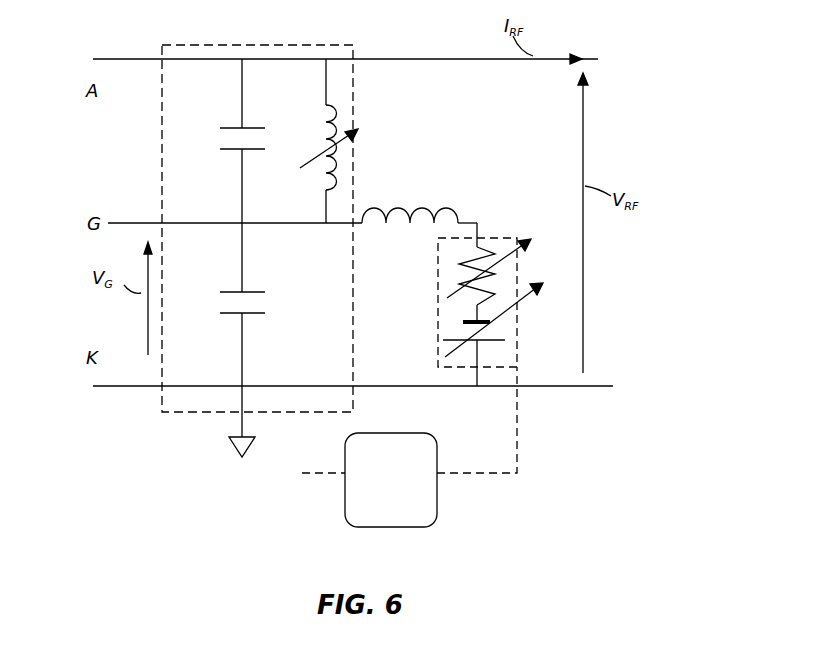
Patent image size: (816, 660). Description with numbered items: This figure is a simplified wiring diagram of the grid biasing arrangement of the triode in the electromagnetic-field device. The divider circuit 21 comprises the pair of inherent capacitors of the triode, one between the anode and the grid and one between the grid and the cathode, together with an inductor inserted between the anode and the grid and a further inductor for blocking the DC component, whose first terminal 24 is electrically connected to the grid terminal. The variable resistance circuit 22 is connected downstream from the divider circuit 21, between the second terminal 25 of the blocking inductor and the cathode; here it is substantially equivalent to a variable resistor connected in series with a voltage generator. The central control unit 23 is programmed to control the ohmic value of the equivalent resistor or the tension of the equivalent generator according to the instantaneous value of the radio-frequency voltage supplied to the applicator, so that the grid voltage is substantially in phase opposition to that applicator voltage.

The divider circuit 21 is at (293, 251).
The variable resistance circuit 22 is at (503, 231).
The central control unit 23 is at (437, 505).
The first terminal 24 is at (326, 226).
The second terminal 25 is at (476, 221).